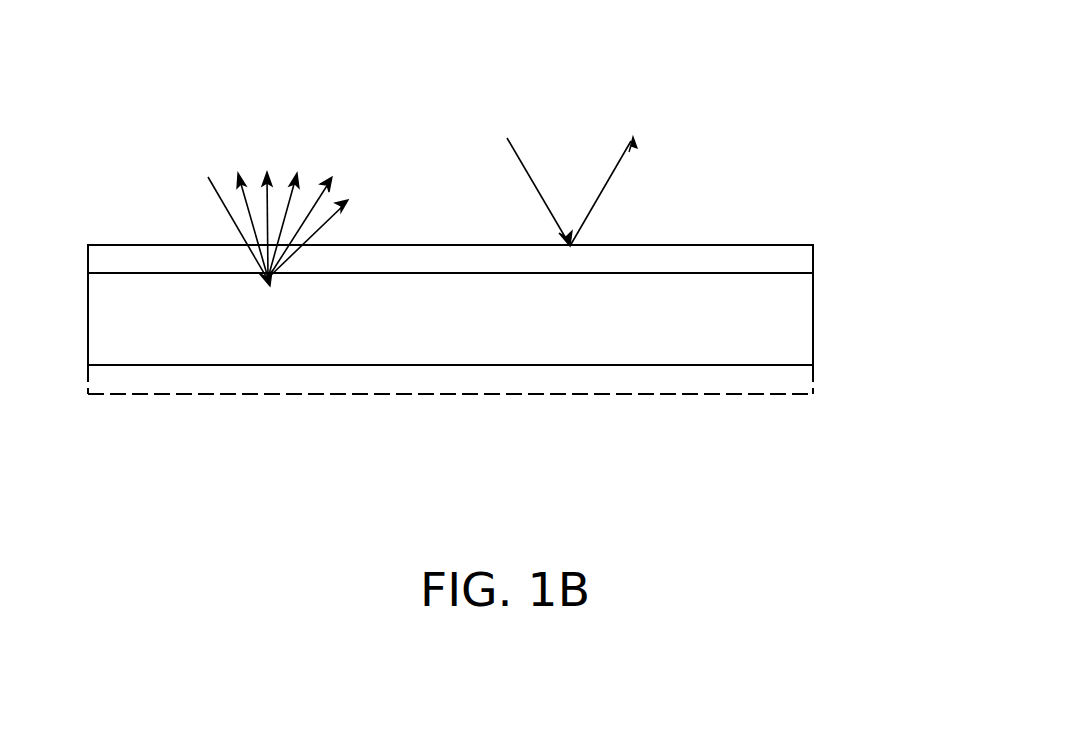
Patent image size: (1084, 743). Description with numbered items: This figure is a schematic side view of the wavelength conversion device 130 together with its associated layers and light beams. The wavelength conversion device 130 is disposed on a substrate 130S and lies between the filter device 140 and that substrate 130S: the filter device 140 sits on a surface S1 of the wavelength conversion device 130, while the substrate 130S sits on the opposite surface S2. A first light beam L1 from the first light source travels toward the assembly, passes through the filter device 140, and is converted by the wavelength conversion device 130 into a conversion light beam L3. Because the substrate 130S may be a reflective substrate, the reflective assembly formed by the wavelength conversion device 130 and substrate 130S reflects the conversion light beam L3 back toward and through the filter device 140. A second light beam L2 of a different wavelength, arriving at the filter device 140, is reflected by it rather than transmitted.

The filter device 140 is at (802, 258).
The wavelength conversion device 130 is at (805, 315).
The substrate 130S is at (803, 382).
The surface S1 is at (723, 274).
The surface S2 is at (734, 366).
The first light beam L1 is at (218, 202).
The second light beam L2 is at (600, 185).
The conversion light beam L3 is at (360, 161).